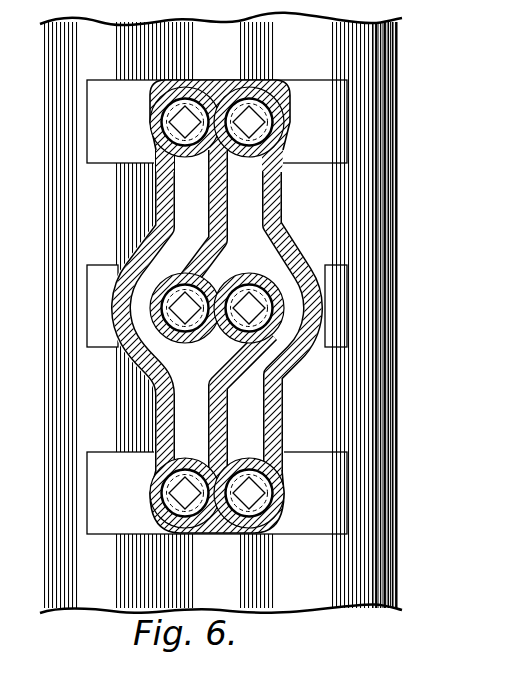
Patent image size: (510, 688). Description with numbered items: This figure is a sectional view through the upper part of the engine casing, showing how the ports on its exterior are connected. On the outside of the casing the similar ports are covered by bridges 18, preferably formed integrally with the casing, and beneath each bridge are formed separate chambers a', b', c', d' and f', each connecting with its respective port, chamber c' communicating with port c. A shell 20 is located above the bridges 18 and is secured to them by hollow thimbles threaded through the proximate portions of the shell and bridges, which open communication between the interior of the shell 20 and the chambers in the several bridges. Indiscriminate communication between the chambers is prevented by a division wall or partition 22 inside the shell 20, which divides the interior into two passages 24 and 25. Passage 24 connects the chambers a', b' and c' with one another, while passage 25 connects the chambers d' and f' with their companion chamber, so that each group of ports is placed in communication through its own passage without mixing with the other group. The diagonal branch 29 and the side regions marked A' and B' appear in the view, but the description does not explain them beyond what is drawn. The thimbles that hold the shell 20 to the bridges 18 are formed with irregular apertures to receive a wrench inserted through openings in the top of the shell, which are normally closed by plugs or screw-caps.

The bridges 18 is at (117, 127).
The shell 20 is at (278, 428).
The division wall 22 is at (224, 425).
The passage 24 is at (154, 272).
The passage 25 is at (219, 215).
The lower diagonal groove 29 is at (228, 406).
The chamber a' is at (185, 122).
The chamber b' is at (249, 308).
The chamber c' is at (185, 308).
The port c is at (185, 493).
The chamber d' is at (249, 122).
The chamber f' is at (249, 493).
The left side plate A' is at (76, 315).
The right side plate B' is at (344, 315).